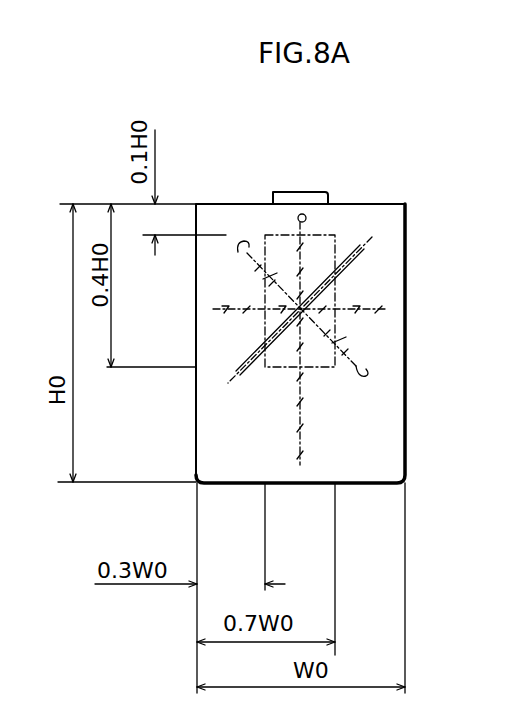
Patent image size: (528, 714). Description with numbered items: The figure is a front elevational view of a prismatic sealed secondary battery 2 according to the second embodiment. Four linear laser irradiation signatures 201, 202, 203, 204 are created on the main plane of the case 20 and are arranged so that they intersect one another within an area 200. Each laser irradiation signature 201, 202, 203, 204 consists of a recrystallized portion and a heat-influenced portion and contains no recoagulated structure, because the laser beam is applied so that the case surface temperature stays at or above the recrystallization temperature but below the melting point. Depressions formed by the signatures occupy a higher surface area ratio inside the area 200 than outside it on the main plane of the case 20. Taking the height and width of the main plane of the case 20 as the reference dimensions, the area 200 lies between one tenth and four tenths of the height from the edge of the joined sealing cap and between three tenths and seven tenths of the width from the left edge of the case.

The prismatic sealed secondary battery 2 is at (348, 294).
The case 20 is at (399, 209).
The area 200 is at (334, 234).
The laser irradiation signature 201 is at (305, 447).
The laser irradiation signature 202 is at (377, 319).
The laser irradiation signature 203 is at (365, 368).
The laser irradiation signature 204 is at (360, 262).